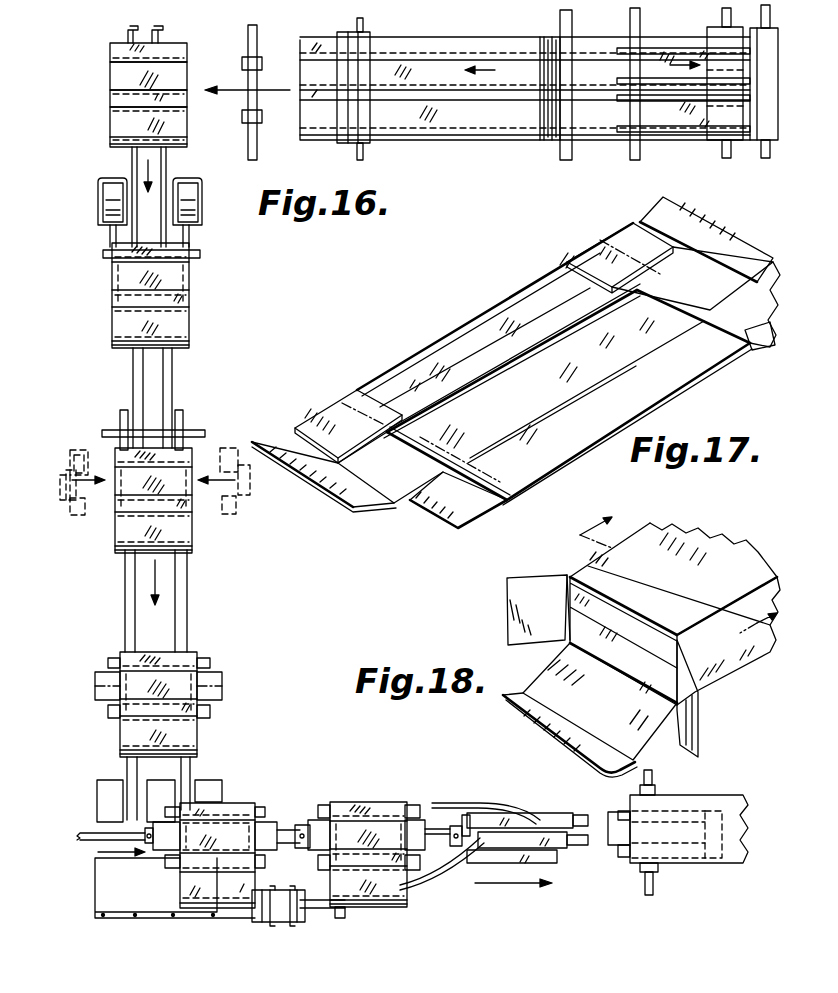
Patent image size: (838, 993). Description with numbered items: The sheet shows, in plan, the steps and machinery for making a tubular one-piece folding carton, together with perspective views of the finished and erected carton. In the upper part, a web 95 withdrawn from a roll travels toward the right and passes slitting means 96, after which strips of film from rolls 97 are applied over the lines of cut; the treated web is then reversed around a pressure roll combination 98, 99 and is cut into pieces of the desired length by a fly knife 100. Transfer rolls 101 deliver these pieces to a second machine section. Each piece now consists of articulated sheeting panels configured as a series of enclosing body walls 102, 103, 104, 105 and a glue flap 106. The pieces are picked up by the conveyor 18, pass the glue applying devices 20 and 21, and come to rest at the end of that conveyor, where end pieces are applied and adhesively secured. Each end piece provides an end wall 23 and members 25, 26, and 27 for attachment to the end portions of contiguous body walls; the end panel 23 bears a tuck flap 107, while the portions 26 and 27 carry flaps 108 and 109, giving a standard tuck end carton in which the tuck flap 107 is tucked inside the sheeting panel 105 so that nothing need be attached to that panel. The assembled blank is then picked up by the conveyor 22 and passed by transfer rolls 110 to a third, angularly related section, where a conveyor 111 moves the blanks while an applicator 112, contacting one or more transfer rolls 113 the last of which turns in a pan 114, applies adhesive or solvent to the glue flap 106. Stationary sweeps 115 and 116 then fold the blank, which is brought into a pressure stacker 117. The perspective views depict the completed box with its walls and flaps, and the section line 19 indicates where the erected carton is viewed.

In FIG. 16, the conveyor 18 is at (133, 158).
In FIG. 18, the section line 19 is at (686, 568).
In FIG. 16, the glue applying device 20 is at (103, 202).
In FIG. 16, the glue applying device 21 is at (202, 200).
In FIG. 16, the conveyor 22 is at (125, 590).
In FIG. 16, the end wall 23 is at (66, 498).
In FIG. 17, the end wall 23 is at (555, 375).
In FIG. 18, the end wall 23 is at (600, 701).
In FIG. 16, the member 25 is at (153, 492).
In FIG. 16, the member 26 is at (86, 515).
In FIG. 17, the member 26 is at (525, 500).
In FIG. 18, the member 26 is at (697, 640).
In FIG. 16, the member 27 is at (85, 445).
In FIG. 17, the member 27 is at (352, 398).
In FIG. 18, the member 27 is at (577, 575).
In FIG. 16, the web 95 is at (477, 88).
In FIG. 16, the slitting means 96 is at (545, 143).
In FIG. 16, the rolls 97 is at (617, 48).
In FIG. 16, the pressure roll 98 is at (740, 158).
In FIG. 16, the pressure roll 99 is at (767, 158).
In FIG. 16, the fly knife 100 is at (345, 150).
In FIG. 16, the transfer rolls 101 is at (258, 50).
In FIG. 16, the body wall 102 is at (110, 48).
In FIG. 17, the body wall 102 is at (495, 315).
In FIG. 18, the body wall 102 is at (623, 622).
In FIG. 16, the body wall 103 is at (110, 68).
In FIG. 18, the body wall 103 is at (623, 666).
In FIG. 16, the body wall 104 is at (110, 97).
In FIG. 18, the body wall 104 is at (728, 641).
In FIG. 16, the body wall 105 is at (110, 122).
In FIG. 17, the body wall 105 is at (567, 392).
In FIG. 18, the body wall 105 is at (713, 553).
In FIG. 16, the glue flap 106 is at (182, 145).
In FIG. 18, the glue flap 106 is at (598, 586).
In FIG. 16, the tuck flap 107 is at (62, 478).
In FIG. 17, the tuck flap 107 is at (327, 492).
In FIG. 18, the tuck flap 107 is at (555, 733).
In FIG. 16, the flap 108 is at (72, 515).
In FIG. 17, the flap 108 is at (748, 352).
In FIG. 18, the flap 108 is at (700, 712).
In FIG. 16, the flap 109 is at (75, 450).
In FIG. 17, the flap 109 is at (484, 343).
In FIG. 18, the flap 109 is at (537, 610).
In FIG. 16, the transfer rolls 110 is at (97, 795).
In FIG. 16, the conveyor 111 is at (80, 832).
In FIG. 16, the applicator 112 is at (318, 910).
In FIG. 16, the transfer rolls 113 is at (290, 925).
In FIG. 16, the pan 114 is at (268, 925).
In FIG. 16, the stationary sweep 115 is at (415, 875).
In FIG. 16, the stationary sweep 116 is at (456, 800).
In FIG. 16, the pressure stacker 117 is at (676, 865).